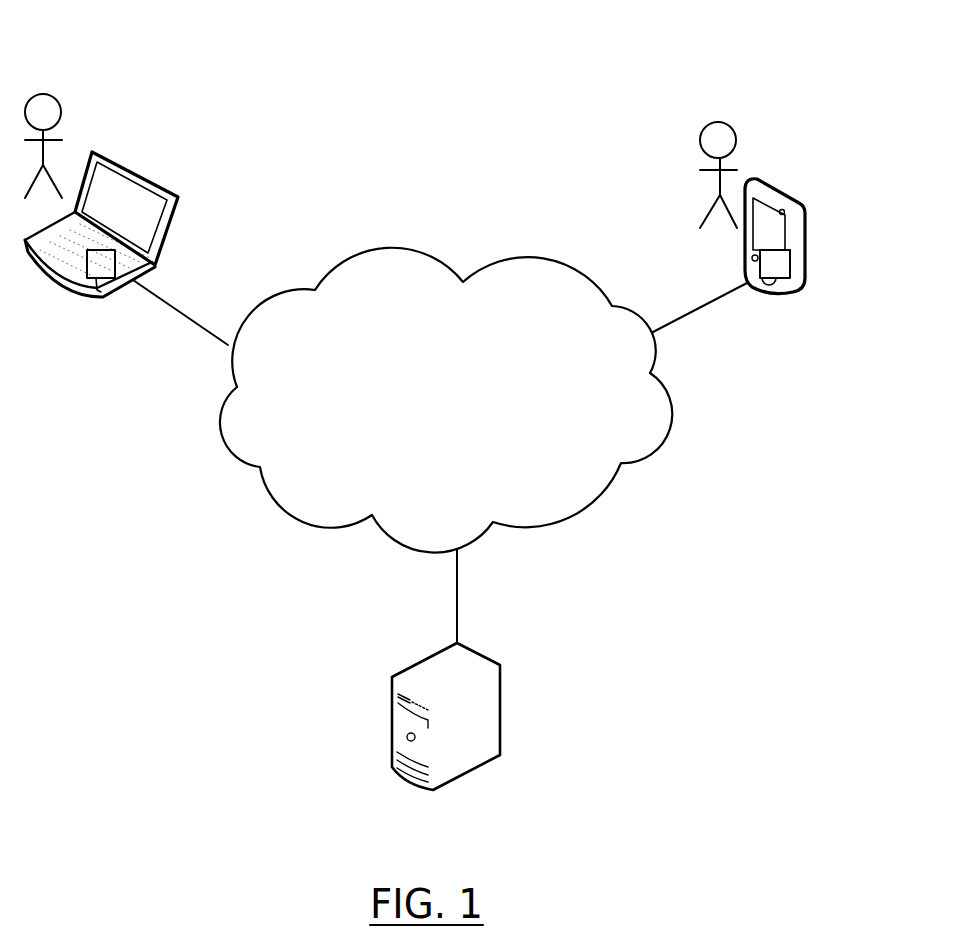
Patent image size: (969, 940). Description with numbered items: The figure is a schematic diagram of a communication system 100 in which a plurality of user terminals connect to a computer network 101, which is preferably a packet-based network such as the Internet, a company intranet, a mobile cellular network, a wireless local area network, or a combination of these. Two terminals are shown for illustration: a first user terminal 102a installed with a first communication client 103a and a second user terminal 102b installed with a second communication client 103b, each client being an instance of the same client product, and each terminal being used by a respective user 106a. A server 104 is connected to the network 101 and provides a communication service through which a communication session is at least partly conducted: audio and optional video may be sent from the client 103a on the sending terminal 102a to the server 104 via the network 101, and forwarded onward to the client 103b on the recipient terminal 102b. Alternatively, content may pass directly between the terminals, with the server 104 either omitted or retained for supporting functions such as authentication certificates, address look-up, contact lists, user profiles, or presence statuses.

The communication system 100 is at (673, 89).
The computer network 101 is at (573, 263).
The first user terminal 102a is at (112, 225).
The second user terminal 102b is at (808, 273).
The first communication client 103a is at (95, 292).
The second communication client 103b is at (778, 275).
The server 104 is at (500, 682).
The user 106a is at (45, 93).